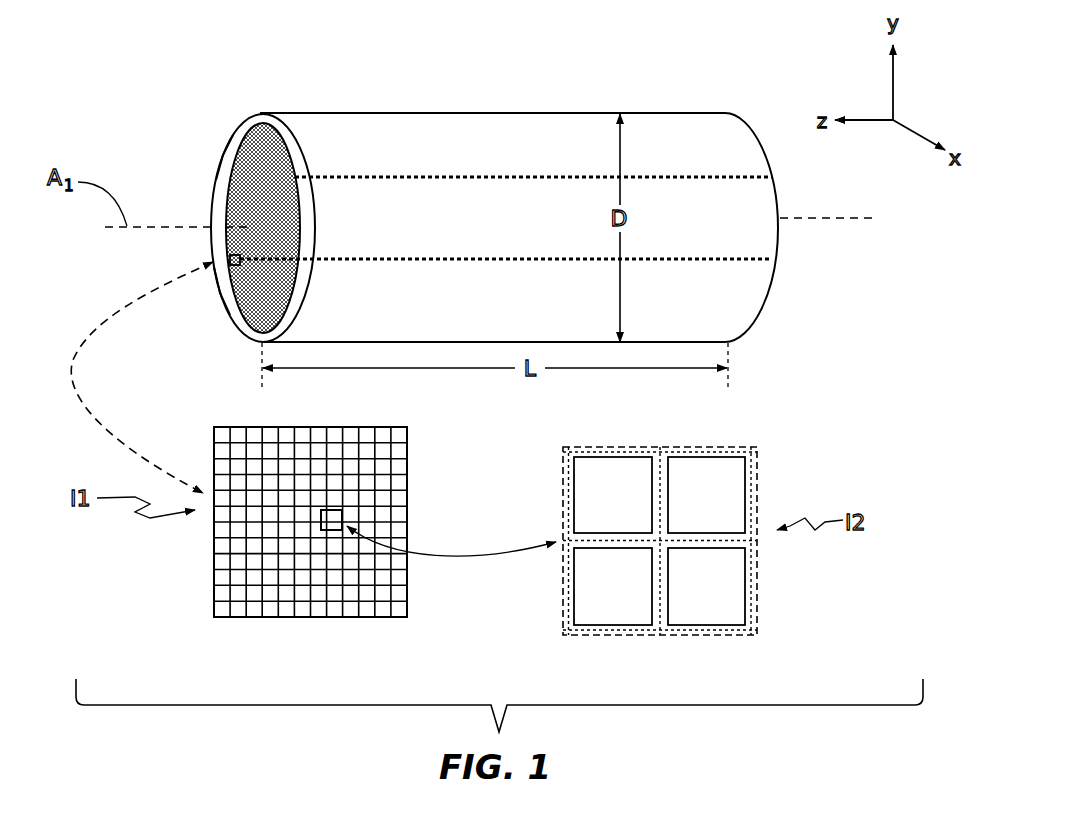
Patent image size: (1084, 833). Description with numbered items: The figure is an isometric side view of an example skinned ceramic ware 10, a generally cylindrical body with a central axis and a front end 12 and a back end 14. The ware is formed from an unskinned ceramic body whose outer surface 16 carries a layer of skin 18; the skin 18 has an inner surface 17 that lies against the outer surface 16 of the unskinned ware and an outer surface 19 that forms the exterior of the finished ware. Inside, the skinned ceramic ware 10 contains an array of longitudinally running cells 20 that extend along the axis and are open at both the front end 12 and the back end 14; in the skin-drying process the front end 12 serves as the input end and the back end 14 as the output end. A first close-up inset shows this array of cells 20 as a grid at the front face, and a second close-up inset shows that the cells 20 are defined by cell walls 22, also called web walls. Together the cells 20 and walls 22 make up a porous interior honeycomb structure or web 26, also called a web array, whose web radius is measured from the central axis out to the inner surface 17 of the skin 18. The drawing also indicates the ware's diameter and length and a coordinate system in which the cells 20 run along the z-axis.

The skinned ceramic ware 10 is at (147, 63).
The front end 12 is at (224, 323).
The back end 14 is at (743, 114).
The outer surface 16 is at (282, 130).
The inner surface 17 is at (256, 134).
The skin 18 is at (236, 137).
The outer surface 19 is at (221, 295).
The cells 20 is at (227, 259).
The cell walls 22 is at (660, 480).
The web 26 is at (438, 447).